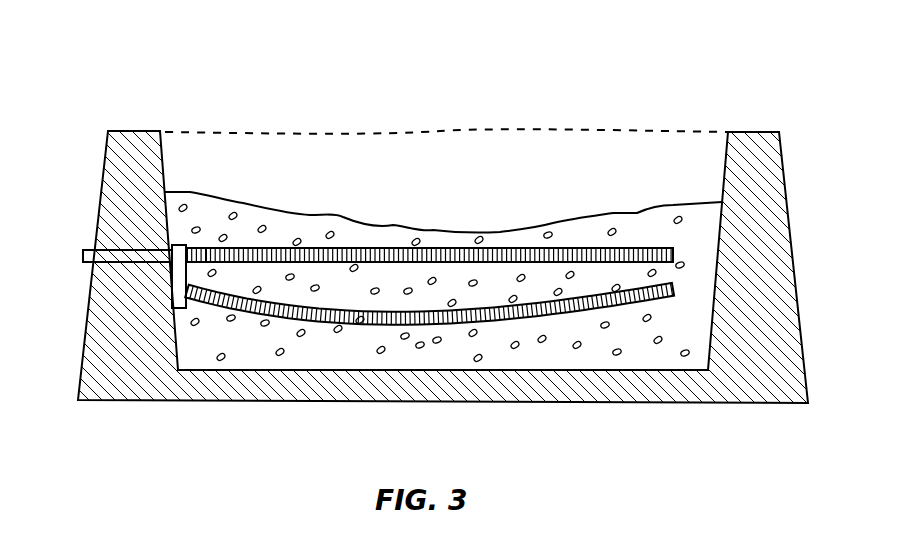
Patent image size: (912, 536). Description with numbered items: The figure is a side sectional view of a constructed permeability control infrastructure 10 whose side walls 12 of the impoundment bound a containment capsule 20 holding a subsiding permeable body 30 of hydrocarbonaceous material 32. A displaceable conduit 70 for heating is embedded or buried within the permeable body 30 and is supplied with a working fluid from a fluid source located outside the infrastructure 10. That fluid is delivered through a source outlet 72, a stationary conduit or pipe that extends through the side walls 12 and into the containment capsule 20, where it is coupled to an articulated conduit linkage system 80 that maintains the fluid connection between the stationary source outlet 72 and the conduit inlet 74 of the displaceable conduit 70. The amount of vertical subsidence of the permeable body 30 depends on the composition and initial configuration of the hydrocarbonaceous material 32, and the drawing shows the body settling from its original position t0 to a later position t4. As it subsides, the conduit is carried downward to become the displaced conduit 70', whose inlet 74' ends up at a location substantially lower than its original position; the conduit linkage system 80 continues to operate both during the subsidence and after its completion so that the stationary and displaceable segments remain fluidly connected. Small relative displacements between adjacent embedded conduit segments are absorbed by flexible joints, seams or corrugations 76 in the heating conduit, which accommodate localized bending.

The constructed permeability control infrastructure 10 is at (110, 81).
The side walls 12 is at (85, 334).
The containment capsule 20 is at (433, 124).
The permeable body 30 is at (290, 213).
The hydrocarbonaceous material 32 is at (702, 238).
The displaceable conduit 70 is at (430, 176).
The displaced conduit 70' is at (429, 366).
The source outlet 72 is at (118, 257).
The conduit inlet 74 is at (215, 176).
The inlet of the displaced conduit 74' is at (208, 368).
The flexible joints, seams or corrugations 76 is at (435, 253).
The articulated conduit linkage system 80 is at (180, 272).
The initial position t0 is at (645, 133).
The subsided position t4 is at (655, 205).